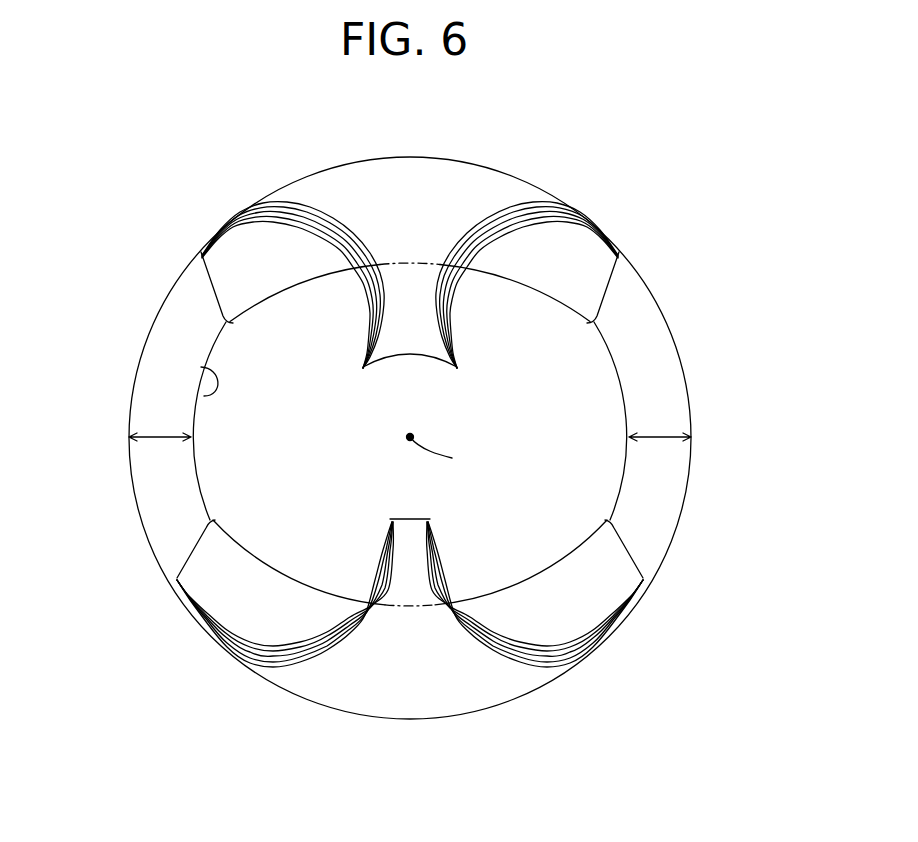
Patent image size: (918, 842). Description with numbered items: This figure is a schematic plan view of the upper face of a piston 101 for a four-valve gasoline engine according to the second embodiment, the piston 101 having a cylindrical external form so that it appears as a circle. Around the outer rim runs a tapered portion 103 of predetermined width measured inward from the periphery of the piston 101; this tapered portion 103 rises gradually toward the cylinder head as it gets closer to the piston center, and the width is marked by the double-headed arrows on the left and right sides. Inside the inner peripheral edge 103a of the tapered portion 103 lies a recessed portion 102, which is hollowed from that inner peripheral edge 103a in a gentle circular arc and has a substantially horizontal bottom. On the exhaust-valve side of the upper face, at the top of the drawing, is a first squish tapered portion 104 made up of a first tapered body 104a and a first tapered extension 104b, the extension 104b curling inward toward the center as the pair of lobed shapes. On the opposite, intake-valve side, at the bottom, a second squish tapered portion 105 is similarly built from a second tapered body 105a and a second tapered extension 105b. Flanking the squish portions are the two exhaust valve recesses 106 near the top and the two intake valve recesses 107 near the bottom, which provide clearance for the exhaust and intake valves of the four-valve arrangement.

The piston 101 is at (672, 153).
The recessed portion 102 is at (598, 383).
The tapered portion 103 is at (157, 502).
The inner peripheral edge of the tapered portion 103a is at (201, 367).
The first squish tapered portion 104 is at (461, 152).
The first tapered body 104a is at (385, 197).
The first tapered extension 104b is at (420, 340).
The second squish tapered portion 105 is at (365, 725).
The second tapered body 105a is at (430, 675).
The second tapered extension 105b is at (407, 530).
The exhaust valve recess 106 is at (228, 282).
The intake valve recess 107 is at (216, 590).